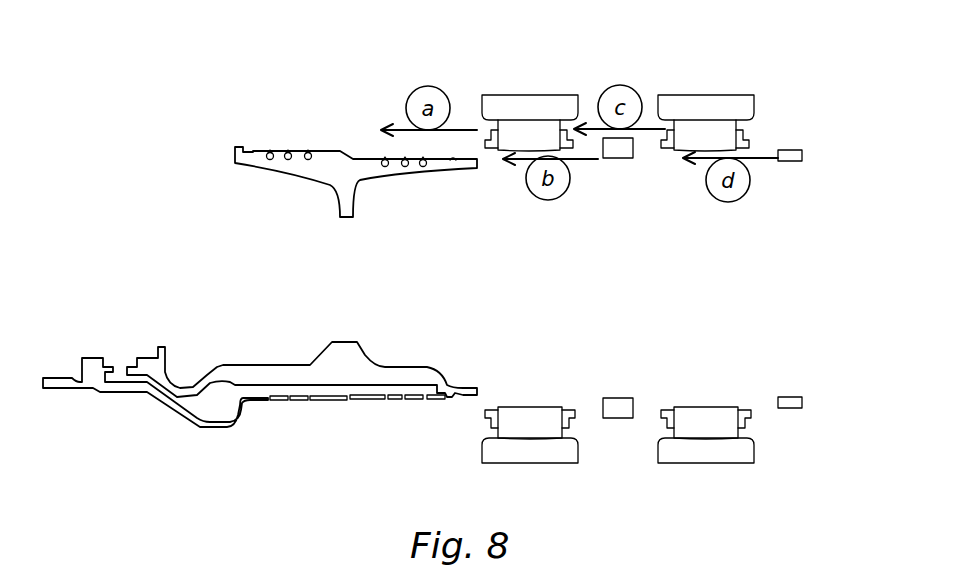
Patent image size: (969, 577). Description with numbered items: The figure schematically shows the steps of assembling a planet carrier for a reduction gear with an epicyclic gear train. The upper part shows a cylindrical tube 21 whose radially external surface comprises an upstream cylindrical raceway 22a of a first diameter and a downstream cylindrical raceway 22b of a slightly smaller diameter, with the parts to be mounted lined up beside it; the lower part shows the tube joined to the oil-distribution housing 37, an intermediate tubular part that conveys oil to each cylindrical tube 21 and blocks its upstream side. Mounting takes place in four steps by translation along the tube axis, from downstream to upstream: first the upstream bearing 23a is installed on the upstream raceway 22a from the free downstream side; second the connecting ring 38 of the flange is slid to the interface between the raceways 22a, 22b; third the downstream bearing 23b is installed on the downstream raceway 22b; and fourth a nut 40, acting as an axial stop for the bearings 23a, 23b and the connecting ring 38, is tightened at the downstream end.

The cylindrical tube 21 is at (337, 193).
The upstream cylindrical raceway 22a is at (258, 150).
The downstream cylindrical raceway 22b is at (365, 157).
The upstream bearing 23a is at (527, 110).
The downstream bearing 23b is at (710, 108).
The oil-distribution housing 37 is at (163, 403).
The connecting ring 38 is at (618, 160).
The nut 40 is at (795, 162).